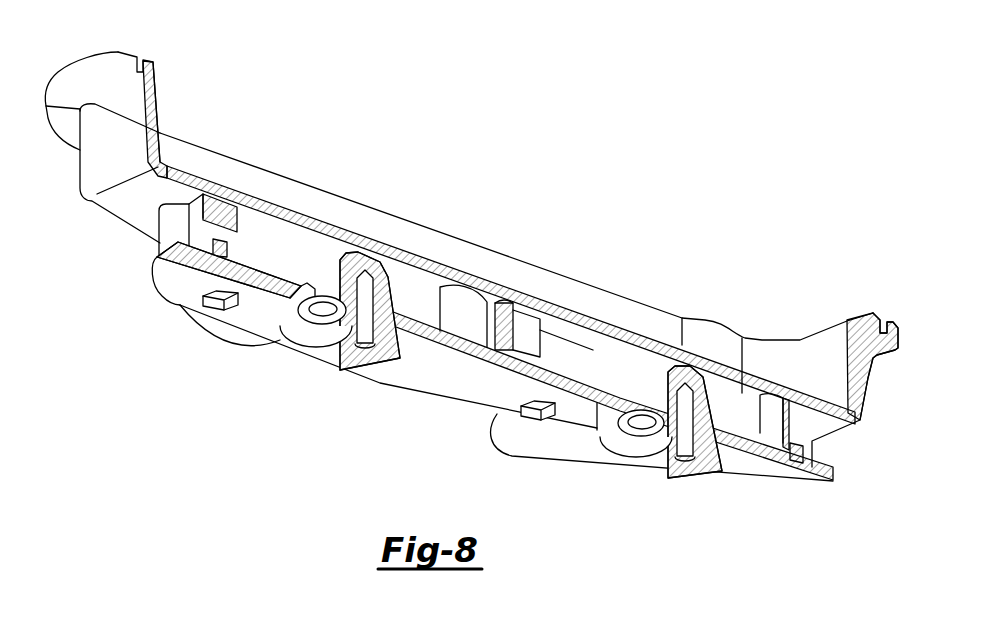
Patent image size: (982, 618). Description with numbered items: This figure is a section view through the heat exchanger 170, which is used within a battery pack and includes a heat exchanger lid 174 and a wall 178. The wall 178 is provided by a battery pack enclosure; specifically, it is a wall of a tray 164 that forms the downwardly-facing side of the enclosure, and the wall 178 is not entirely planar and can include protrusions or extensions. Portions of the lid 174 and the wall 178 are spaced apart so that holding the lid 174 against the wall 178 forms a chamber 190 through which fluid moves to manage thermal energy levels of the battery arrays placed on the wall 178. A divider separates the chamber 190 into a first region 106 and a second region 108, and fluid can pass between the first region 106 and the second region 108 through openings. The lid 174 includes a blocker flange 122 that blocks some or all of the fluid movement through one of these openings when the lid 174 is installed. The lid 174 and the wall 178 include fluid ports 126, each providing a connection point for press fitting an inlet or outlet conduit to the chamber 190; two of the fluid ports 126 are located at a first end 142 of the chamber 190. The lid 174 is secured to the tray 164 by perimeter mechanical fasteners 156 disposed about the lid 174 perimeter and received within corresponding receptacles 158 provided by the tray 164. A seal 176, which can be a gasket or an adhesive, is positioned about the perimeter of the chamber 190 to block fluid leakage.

The first region 106 is at (400, 295).
The second region 108 is at (722, 401).
The blocker flange 122 is at (497, 327).
The fluid ports 126 is at (322, 330).
The first end 142 is at (415, 437).
The perimeter mechanical fasteners 156 is at (223, 310).
The receptacles 158 is at (366, 343).
The tray 164 is at (103, 71).
The heat exchanger 170 is at (245, 428).
The heat exchanger lid 174 is at (260, 317).
The seal 176 is at (232, 250).
The wall 178 is at (200, 221).
The chamber 190 is at (588, 356).